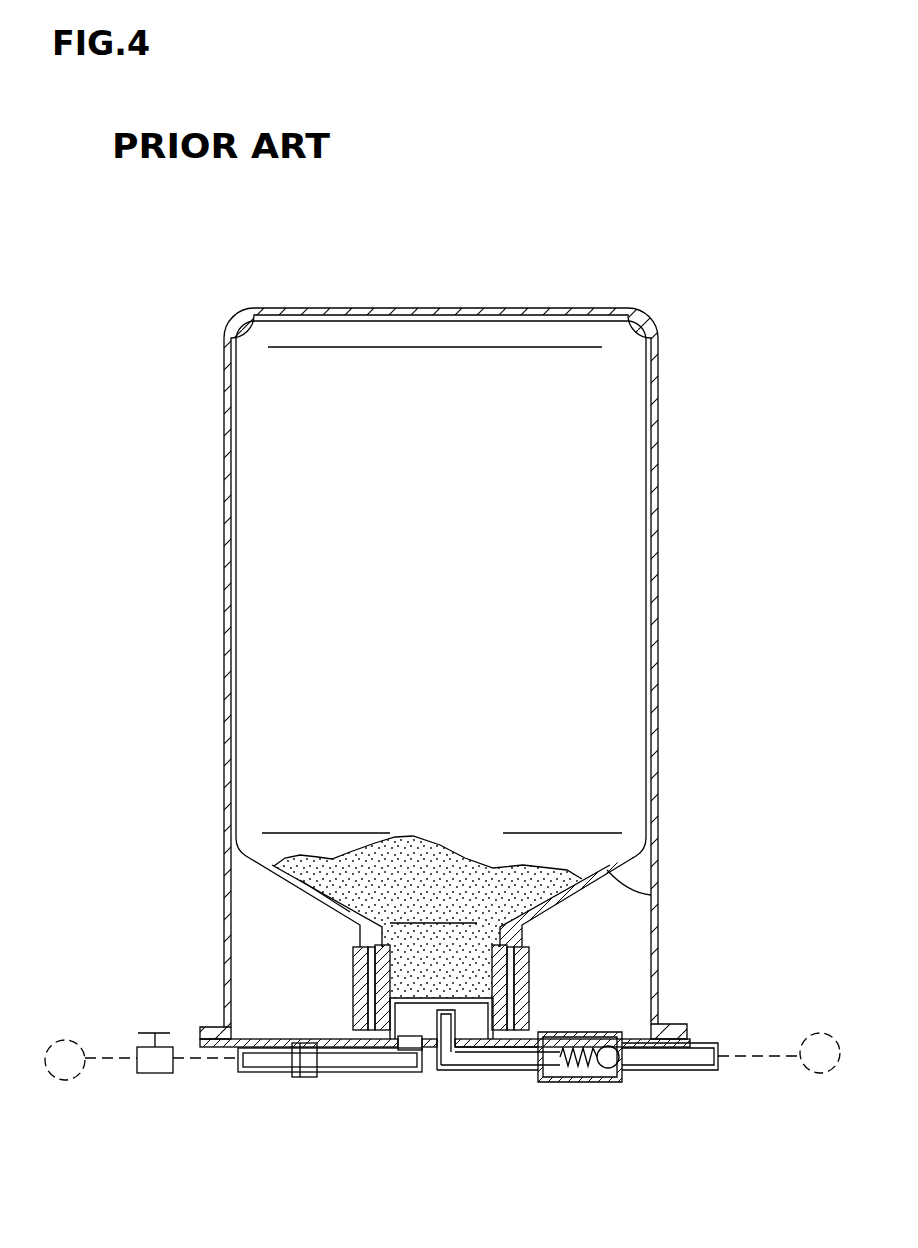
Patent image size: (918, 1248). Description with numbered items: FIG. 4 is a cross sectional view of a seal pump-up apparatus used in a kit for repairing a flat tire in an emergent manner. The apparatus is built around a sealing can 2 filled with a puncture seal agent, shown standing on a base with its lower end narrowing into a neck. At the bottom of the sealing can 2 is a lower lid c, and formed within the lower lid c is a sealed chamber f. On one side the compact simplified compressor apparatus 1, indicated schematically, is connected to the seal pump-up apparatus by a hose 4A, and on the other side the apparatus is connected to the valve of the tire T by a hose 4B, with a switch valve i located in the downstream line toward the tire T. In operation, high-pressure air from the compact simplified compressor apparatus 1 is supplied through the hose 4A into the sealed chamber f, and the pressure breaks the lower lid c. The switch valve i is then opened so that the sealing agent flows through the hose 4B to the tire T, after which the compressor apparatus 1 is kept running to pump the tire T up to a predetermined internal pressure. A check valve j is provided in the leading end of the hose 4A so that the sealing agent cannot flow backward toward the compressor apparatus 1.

The sealing can 2 is at (660, 895).
The lower lid c is at (477, 1020).
The sealed chamber f is at (522, 1035).
The hose 4A is at (700, 1040).
The hose 4B is at (255, 1075).
The tire T is at (78, 1040).
The switch valve i is at (160, 1077).
The check valve j is at (592, 1084).
The compact simplified compressor apparatus 1 is at (826, 1074).